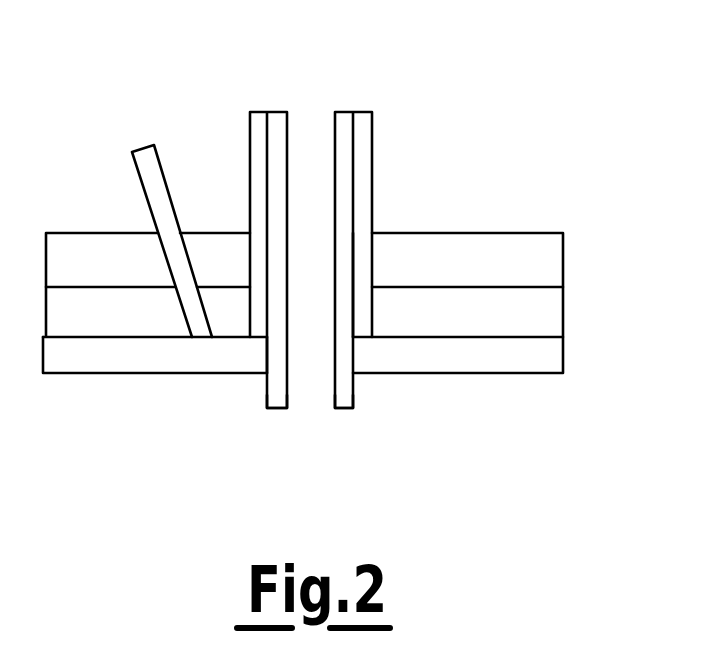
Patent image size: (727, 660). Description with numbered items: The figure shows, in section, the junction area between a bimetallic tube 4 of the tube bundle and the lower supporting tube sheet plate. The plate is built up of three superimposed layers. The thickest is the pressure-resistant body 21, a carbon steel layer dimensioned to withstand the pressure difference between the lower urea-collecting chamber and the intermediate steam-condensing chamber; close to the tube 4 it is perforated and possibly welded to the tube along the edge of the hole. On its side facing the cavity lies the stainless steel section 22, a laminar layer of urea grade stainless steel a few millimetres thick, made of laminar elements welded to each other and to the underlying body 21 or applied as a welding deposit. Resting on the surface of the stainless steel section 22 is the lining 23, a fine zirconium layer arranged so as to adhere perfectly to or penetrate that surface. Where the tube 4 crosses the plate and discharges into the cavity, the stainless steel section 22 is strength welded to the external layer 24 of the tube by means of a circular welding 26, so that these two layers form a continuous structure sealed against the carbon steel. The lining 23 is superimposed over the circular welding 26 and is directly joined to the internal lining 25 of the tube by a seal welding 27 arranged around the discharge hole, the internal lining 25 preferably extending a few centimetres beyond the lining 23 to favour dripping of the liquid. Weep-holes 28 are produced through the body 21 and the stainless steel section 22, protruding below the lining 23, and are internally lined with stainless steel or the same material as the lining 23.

The tube 4 is at (326, 260).
The pressure-resistant body 21 is at (533, 268).
The stainless steel section 22 is at (518, 313).
The lining 23 is at (483, 358).
The external layer of the tube 24 is at (262, 127).
The internal lining of the tube 25 is at (287, 407).
The circular welding 26 is at (370, 315).
The seal welding 27 is at (267, 355).
The weep-holes 28 is at (158, 203).